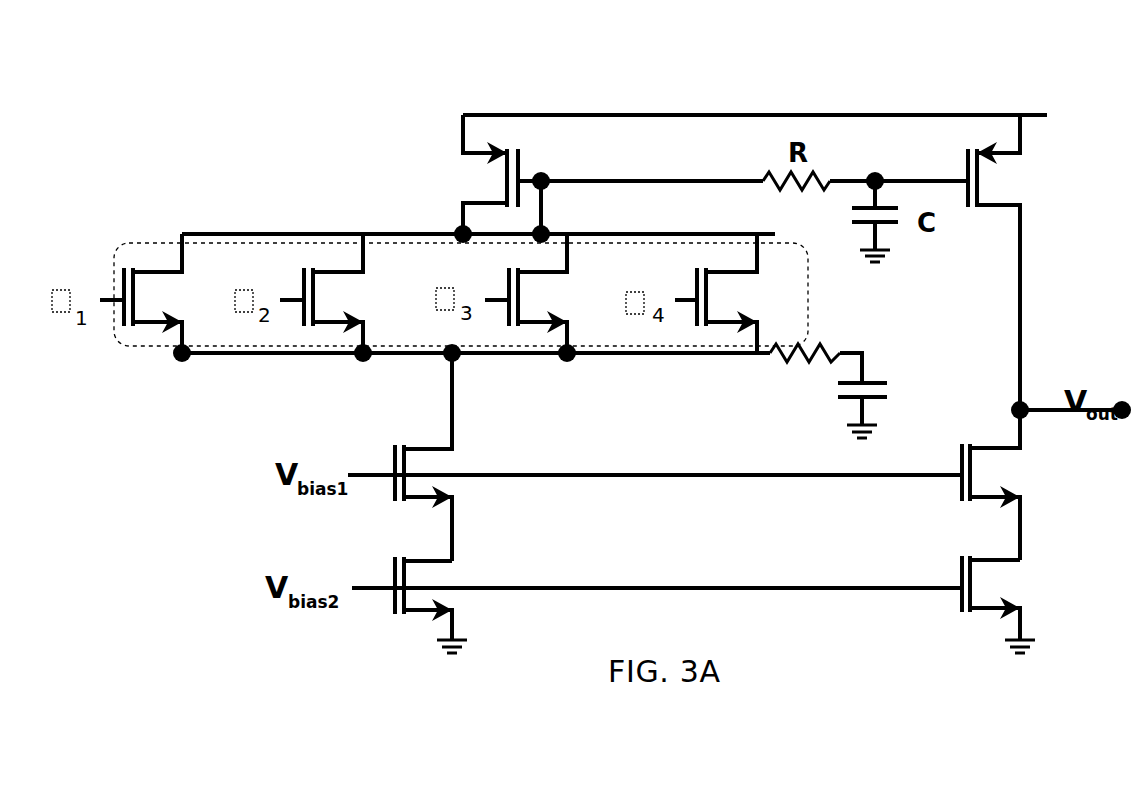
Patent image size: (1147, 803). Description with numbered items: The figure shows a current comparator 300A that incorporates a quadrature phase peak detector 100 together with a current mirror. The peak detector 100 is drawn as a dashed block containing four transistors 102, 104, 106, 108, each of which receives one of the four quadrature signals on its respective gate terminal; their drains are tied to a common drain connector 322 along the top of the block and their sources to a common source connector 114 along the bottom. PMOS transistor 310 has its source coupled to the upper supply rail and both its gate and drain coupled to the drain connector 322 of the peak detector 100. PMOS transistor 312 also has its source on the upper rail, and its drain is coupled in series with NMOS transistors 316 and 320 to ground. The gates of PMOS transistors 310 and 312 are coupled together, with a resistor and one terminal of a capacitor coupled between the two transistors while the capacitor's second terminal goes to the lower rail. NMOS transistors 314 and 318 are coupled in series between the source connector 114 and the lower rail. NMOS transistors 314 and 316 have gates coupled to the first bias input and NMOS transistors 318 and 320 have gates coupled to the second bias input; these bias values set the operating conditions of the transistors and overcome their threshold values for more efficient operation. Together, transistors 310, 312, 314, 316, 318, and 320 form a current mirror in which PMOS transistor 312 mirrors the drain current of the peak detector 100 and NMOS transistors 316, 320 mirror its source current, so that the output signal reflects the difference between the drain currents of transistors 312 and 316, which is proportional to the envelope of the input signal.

The current comparator 300A is at (989, 77).
The quadrature phase peak detector 100 is at (808, 340).
The transistor 102 is at (142, 293).
The transistor 104 is at (324, 293).
The transistor 106 is at (526, 293).
The transistor 108 is at (725, 293).
The source connector 114 is at (265, 355).
The drain connector 322 is at (273, 233).
The PMOS transistor 310 is at (490, 174).
The PMOS transistor 312 is at (1006, 262).
The NMOS transistor 314 is at (423, 457).
The NMOS transistor 316 is at (998, 485).
The NMOS transistor 318 is at (431, 594).
The NMOS transistor 320 is at (998, 604).